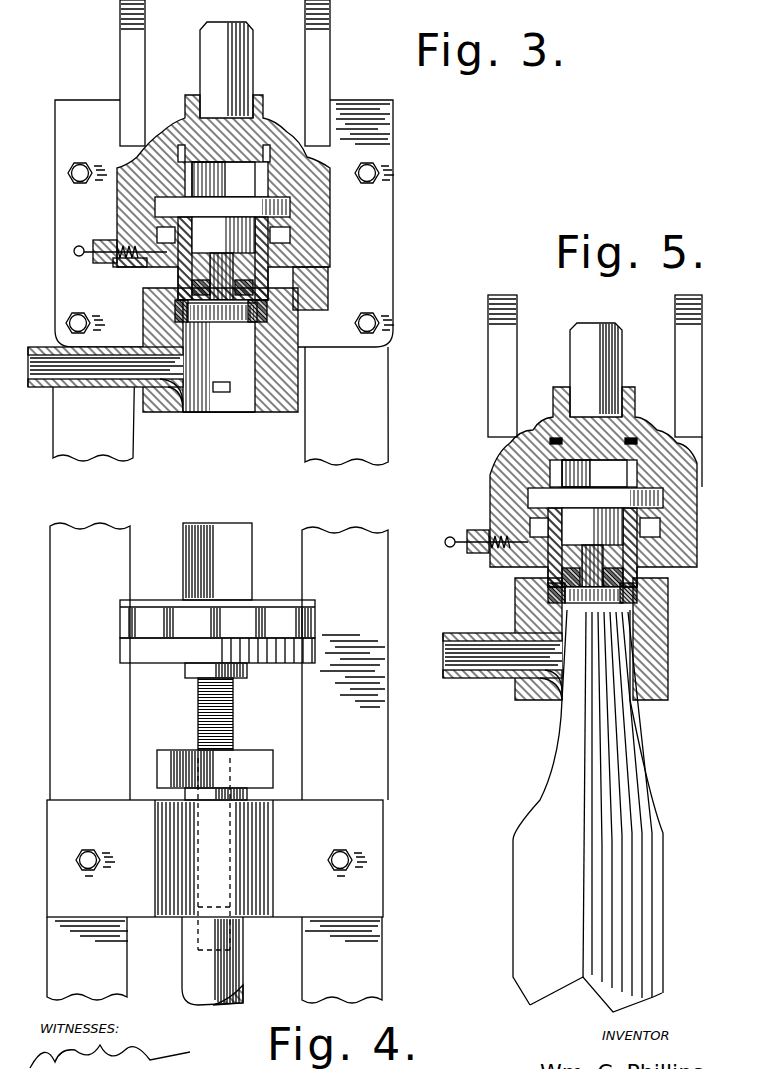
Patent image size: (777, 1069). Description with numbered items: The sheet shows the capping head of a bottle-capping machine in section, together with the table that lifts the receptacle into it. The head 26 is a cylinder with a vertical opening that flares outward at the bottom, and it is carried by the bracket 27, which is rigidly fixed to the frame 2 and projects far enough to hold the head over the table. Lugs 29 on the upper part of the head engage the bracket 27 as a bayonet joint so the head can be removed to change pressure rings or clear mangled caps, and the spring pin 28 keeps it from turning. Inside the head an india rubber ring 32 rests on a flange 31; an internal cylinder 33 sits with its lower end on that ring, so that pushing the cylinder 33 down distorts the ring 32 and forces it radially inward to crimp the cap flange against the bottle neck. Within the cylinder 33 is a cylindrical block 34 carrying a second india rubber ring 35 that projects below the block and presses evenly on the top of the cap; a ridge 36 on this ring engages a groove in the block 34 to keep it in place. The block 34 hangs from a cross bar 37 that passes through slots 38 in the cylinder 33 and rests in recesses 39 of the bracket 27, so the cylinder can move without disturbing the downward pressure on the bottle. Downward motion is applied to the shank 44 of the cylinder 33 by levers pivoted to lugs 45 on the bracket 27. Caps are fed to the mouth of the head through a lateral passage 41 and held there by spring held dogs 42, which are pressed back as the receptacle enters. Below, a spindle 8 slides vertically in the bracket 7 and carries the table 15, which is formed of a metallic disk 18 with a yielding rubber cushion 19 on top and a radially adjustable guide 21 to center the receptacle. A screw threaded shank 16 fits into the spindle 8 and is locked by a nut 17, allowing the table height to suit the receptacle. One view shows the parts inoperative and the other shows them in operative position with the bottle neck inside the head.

In FIG. 3, the frame 2 is at (223, 282).
In FIG. 4, the frame 2 is at (217, 763).
In FIG. 4, the bracket 7 is at (215, 858).
In FIG. 4, the spindle 8 is at (214, 881).
In FIG. 4, the table 15 is at (130, 650).
In FIG. 4, the screw threaded shank 16 is at (198, 705).
In FIG. 4, the nut 17 is at (247, 758).
In FIG. 4, the metallic disk 18 is at (217, 651).
In FIG. 4, the cushion 19 is at (217, 619).
In FIG. 4, the guide or backing member 21 is at (217, 561).
In FIG. 3, the head 26 is at (283, 383).
In FIG. 5, the head 26 is at (670, 655).
In FIG. 3, the bracket 27 is at (296, 173).
In FIG. 5, the bracket 27 is at (660, 457).
In FIG. 3, the spring pin 28 is at (74, 250).
In FIG. 5, the spring pin 28 is at (456, 526).
In FIG. 3, the lugs 29 is at (122, 228).
In FIG. 5, the lugs 29 is at (650, 542).
In FIG. 3, the flange 31 is at (260, 325).
In FIG. 5, the flange 31 is at (633, 620).
In FIG. 3, the india rubber ring 32 is at (264, 310).
In FIG. 5, the india rubber ring 32 is at (640, 595).
In FIG. 3, the internal cylinder 33 is at (262, 270).
In FIG. 5, the internal cylinder 33 is at (592, 547).
In FIG. 3, the cylindrical block 34 is at (223, 235).
In FIG. 5, the cylindrical block 34 is at (592, 526).
In FIG. 3, the india rubber ring 35 is at (193, 288).
In FIG. 5, the india rubber ring 35 is at (560, 583).
In FIG. 3, the projecting ridge 36 is at (213, 269).
In FIG. 5, the projecting ridge 36 is at (586, 560).
In FIG. 3, the cross bar 37 is at (222, 207).
In FIG. 5, the cross bar 37 is at (595, 499).
In FIG. 3, the slots 38 is at (186, 181).
In FIG. 5, the slots 38 is at (557, 473).
In FIG. 3, the recesses 39 is at (283, 230).
In FIG. 5, the recesses 39 is at (653, 520).
In FIG. 3, the passage 41 is at (62, 373).
In FIG. 5, the passage 41 is at (468, 660).
In FIG. 3, the spring held dogs 42 is at (227, 393).
In FIG. 3, the shank 44 is at (230, 26).
In FIG. 5, the shank 44 is at (605, 327).
In FIG. 3, the lugs 45 is at (123, 38).
In FIG. 5, the lugs 45 is at (704, 339).